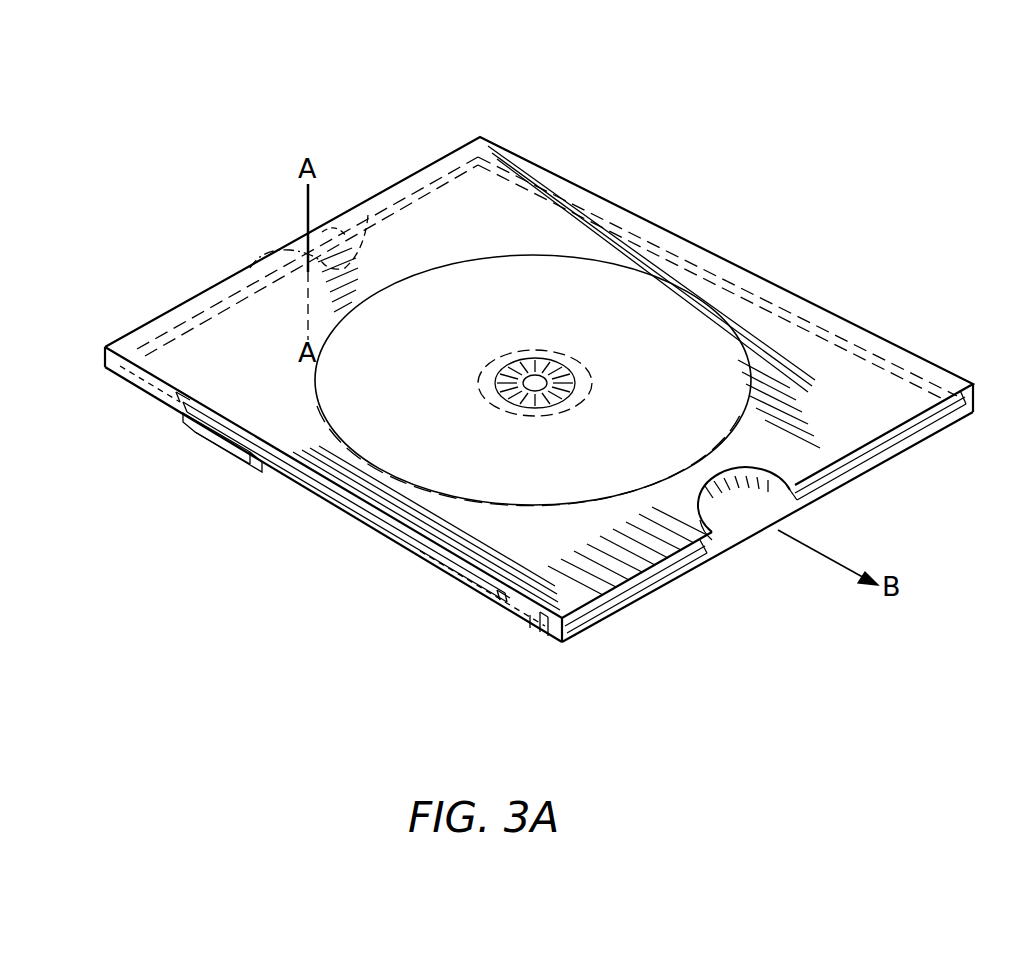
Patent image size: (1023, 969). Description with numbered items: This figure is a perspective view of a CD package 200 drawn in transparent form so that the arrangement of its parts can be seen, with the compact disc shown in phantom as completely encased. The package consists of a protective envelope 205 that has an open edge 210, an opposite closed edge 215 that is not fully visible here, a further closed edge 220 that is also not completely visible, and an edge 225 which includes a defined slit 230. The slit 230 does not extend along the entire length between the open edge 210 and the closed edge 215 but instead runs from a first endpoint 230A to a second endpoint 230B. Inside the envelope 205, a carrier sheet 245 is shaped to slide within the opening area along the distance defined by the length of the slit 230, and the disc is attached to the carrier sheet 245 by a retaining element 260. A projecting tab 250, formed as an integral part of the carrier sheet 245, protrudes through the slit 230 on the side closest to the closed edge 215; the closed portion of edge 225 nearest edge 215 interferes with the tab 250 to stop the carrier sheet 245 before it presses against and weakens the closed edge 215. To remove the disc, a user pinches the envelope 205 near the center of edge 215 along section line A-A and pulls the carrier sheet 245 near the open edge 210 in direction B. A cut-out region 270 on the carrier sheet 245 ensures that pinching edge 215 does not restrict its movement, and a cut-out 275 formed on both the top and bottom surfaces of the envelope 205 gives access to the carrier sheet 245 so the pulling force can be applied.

The CD package 200 is at (686, 680).
The envelope 205 is at (855, 320).
The open edge 210 is at (723, 542).
The closed edge 215 is at (284, 248).
The closed edge 220 is at (522, 175).
The edge 225 is at (520, 620).
The slit 230 is at (372, 510).
The endpoint 230A is at (182, 410).
The endpoint 230B is at (480, 594).
The carrier sheet 245 is at (755, 530).
The projecting tab 250 is at (222, 446).
The retaining element 260 is at (547, 372).
The cut-out region 270 is at (368, 215).
The cut-out 275 is at (790, 500).